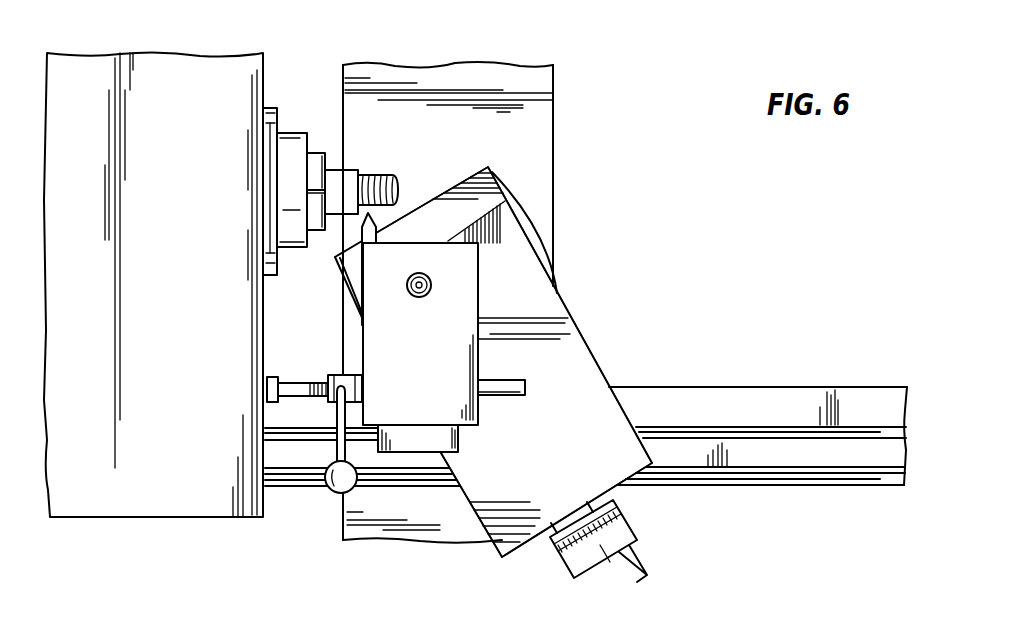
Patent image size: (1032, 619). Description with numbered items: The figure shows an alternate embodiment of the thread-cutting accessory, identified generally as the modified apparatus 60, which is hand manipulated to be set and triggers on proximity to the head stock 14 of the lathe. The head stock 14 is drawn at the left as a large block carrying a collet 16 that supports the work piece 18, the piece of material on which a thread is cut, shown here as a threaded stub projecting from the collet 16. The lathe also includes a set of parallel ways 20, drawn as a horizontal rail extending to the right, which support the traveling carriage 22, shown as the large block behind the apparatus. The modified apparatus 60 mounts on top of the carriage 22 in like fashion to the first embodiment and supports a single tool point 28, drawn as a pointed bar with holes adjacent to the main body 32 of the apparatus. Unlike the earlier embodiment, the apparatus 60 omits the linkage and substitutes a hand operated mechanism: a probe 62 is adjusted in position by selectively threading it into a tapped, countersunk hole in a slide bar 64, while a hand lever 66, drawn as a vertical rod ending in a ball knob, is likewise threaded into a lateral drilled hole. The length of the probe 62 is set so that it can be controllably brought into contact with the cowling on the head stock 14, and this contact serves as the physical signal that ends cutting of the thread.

The head stock 14 is at (176, 239).
The collet 16 is at (297, 132).
The work piece 18 is at (366, 172).
The parallel ways 20 is at (788, 448).
The traveling carriage 22 is at (557, 143).
The tool point 28 is at (360, 226).
The slide block 32 is at (415, 360).
The modified version of the apparatus 60 is at (495, 290).
The probe 62 is at (290, 378).
The slide bar 64 is at (358, 374).
The hand lever 66 is at (337, 447).